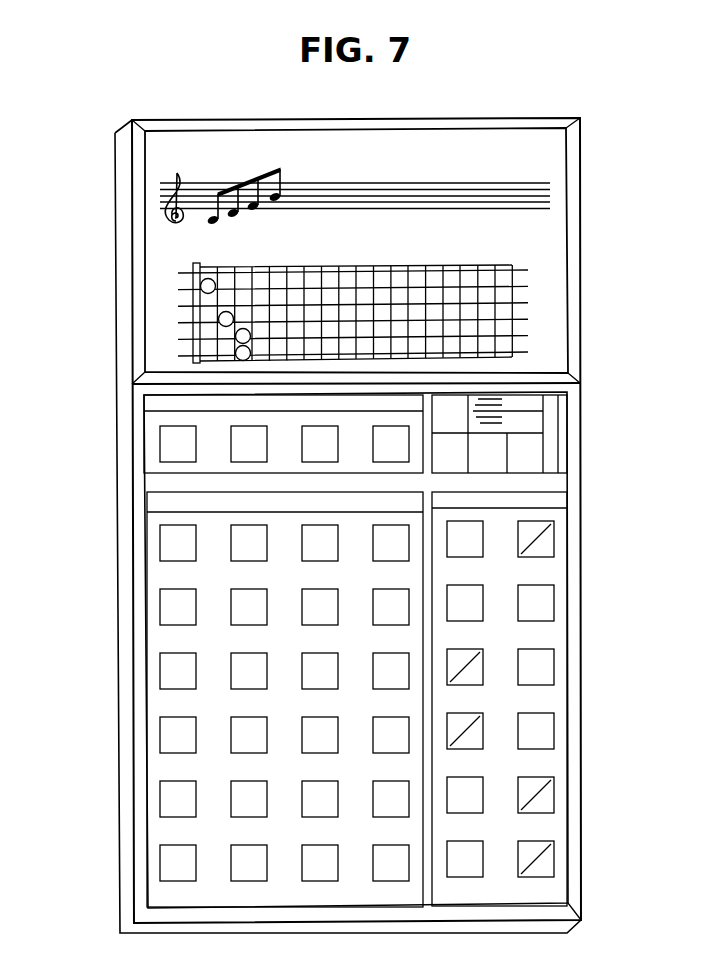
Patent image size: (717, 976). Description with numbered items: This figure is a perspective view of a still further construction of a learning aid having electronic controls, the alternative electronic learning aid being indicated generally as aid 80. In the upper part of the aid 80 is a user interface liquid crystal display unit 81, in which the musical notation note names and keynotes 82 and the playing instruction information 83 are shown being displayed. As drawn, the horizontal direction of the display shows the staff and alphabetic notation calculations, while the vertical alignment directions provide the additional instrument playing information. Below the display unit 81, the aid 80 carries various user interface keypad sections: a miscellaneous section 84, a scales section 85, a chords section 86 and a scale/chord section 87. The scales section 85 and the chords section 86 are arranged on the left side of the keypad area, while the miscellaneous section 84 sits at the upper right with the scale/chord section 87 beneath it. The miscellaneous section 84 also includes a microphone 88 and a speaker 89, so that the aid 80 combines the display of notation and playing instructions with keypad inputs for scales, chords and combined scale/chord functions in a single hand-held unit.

The electronic learning aid 80 is at (606, 187).
The user interface liquid crystal display unit 81 is at (556, 240).
The musical notation note names and keynotes 82 is at (486, 190).
The playing instruction information 83 is at (165, 278).
The miscellaneous section 84 is at (559, 445).
The scales section 85 is at (122, 423).
The chords section 86 is at (165, 577).
The scale/chord section 87 is at (548, 573).
The microphone 88 is at (505, 412).
The speaker 89 is at (553, 453).